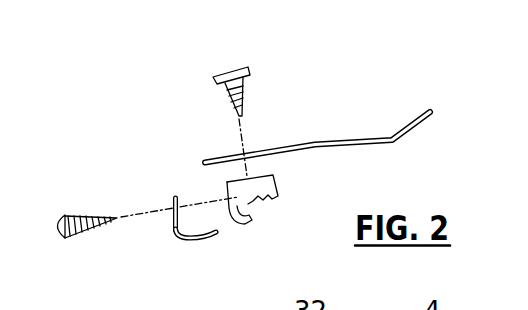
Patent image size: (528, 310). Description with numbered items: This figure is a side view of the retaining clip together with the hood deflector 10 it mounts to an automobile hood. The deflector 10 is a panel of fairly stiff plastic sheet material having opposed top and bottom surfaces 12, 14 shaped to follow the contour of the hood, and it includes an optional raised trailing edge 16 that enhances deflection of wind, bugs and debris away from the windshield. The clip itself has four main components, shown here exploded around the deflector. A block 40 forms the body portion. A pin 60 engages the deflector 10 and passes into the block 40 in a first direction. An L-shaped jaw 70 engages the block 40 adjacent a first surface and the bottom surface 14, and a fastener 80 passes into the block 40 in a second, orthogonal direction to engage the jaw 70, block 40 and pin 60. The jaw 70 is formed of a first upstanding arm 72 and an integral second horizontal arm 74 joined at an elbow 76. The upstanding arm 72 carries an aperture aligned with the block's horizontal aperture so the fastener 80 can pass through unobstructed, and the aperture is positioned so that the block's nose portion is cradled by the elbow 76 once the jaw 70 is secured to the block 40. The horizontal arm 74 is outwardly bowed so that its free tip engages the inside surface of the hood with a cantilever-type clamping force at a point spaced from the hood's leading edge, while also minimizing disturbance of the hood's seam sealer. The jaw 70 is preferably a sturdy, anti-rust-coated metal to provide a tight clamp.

The hood deflector 10 is at (400, 105).
The top surface 12 is at (310, 141).
The bottom surface 14 is at (356, 148).
The raised trailing edge 16 is at (416, 128).
The block 40 is at (279, 188).
The pin 60 is at (259, 66).
The L-shaped jaw 70 is at (160, 239).
The first upstanding arm 72 is at (173, 194).
The second horizontal arm 74 is at (196, 241).
The elbow 76 is at (177, 241).
The fastener 80 is at (92, 213).